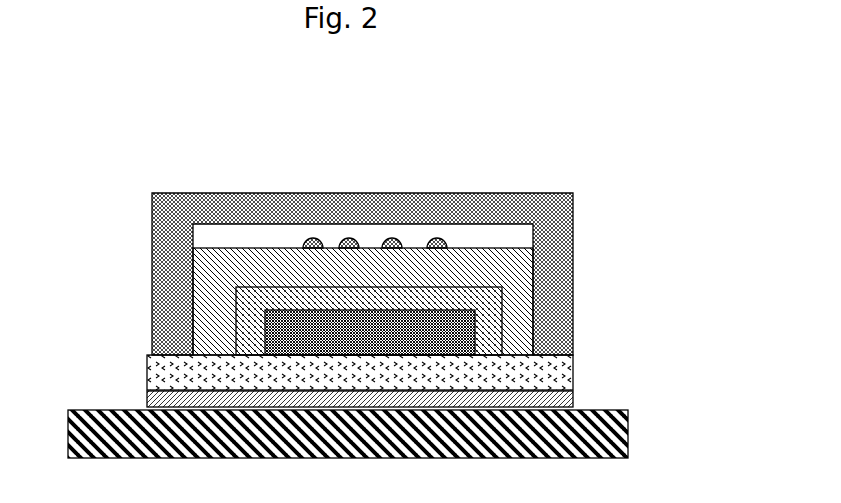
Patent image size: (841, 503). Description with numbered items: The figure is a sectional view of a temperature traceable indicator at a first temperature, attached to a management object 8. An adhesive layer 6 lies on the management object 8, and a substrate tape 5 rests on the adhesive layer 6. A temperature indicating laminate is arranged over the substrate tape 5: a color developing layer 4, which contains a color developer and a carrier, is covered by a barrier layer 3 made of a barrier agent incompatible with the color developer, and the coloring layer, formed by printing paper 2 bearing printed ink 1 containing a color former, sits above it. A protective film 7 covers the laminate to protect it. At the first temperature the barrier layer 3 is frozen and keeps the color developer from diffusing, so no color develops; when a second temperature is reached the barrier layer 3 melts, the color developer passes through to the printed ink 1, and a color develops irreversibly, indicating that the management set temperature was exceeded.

The printed ink 1 is at (308, 240).
The printing paper 2 is at (507, 277).
The barrier layer 3 is at (250, 298).
The color developing layer 4 is at (463, 345).
The substrate tape 5 is at (148, 355).
The adhesive layer 6 is at (573, 397).
The protective film 7 is at (573, 197).
The management object 8 is at (608, 436).